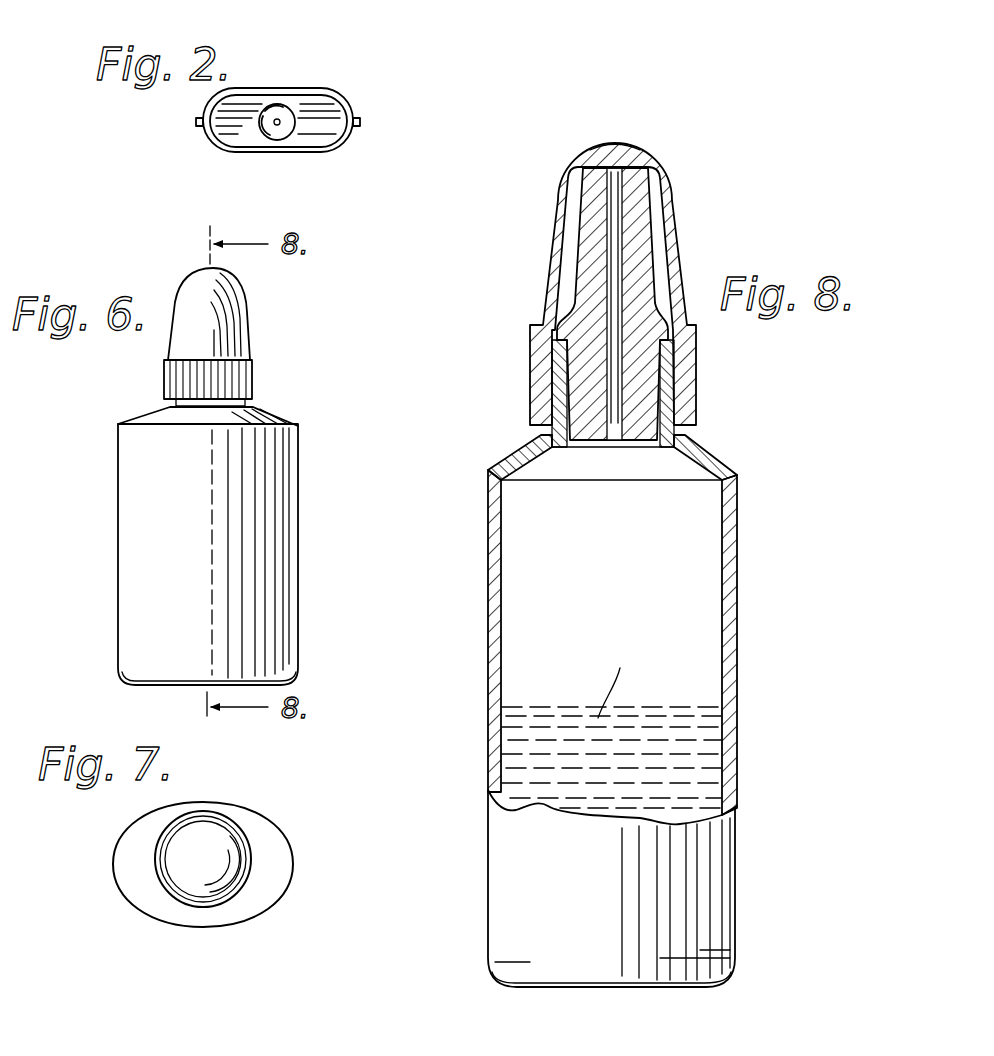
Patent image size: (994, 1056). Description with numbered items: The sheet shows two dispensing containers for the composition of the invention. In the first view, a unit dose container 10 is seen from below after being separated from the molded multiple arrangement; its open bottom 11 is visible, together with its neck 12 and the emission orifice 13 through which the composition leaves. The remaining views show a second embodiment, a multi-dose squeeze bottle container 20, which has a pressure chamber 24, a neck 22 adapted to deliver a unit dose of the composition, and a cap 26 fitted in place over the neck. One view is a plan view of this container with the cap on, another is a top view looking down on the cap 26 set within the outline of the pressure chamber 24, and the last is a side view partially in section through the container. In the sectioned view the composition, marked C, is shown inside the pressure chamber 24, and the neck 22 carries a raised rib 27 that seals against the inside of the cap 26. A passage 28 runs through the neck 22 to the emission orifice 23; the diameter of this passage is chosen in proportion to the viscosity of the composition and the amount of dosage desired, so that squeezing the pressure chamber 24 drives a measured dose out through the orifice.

In FIG. 2, the unit dose container 10 is at (277, 76).
In FIG. 2, the open bottom 11 is at (320, 134).
In FIG. 2, the neck 12 is at (294, 118).
In FIG. 2, the emission orifice 13 is at (277, 126).
In FIG. 6, the multi-dose squeeze bottle container 20 is at (314, 497).
In FIG. 7, the multi-dose squeeze bottle container 20 is at (274, 829).
In FIG. 8, the multi-dose squeeze bottle container 20 is at (764, 755).
In FIG. 6, the neck 22 is at (190, 403).
In FIG. 8, the neck 22 is at (656, 263).
In FIG. 8, the emission orifice 23 is at (630, 148).
In FIG. 6, the pressure chamber 24 is at (128, 557).
In FIG. 7, the pressure chamber 24 is at (130, 822).
In FIG. 8, the pressure chamber 24 is at (490, 657).
In FIG. 6, the cap 26 is at (240, 329).
In FIG. 7, the cap 26 is at (178, 878).
In FIG. 8, the cap 26 is at (540, 278).
In FIG. 8, the raised rib 27 is at (603, 167).
In FIG. 8, the passage 28 is at (618, 383).